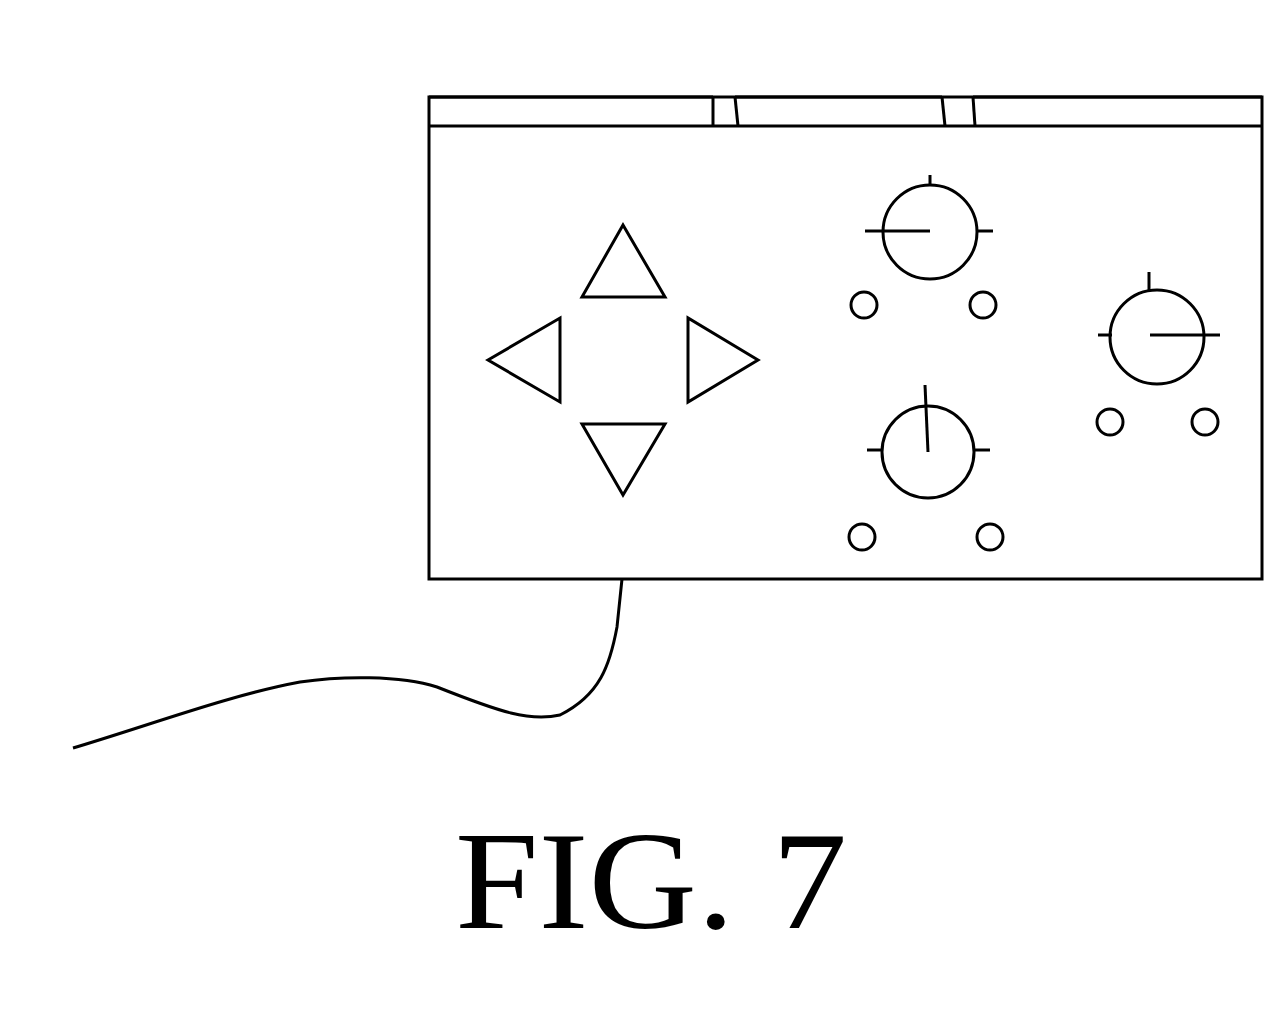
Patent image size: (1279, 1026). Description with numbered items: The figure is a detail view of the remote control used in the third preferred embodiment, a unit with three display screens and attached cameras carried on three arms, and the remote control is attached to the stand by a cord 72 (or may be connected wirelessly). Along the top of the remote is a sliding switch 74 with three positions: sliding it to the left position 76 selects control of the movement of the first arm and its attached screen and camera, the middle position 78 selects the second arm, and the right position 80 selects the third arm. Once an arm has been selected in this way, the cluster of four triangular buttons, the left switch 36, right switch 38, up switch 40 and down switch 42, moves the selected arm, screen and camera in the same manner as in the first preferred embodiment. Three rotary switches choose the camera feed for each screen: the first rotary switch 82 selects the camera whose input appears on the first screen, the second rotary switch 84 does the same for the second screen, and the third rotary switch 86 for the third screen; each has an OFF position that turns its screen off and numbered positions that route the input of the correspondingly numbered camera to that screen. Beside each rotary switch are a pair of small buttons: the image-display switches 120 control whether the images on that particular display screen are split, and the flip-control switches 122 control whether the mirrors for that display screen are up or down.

The left switch 36 is at (488, 360).
The right switch 38 is at (728, 340).
The up switch 40 is at (637, 237).
The down switch 42 is at (600, 462).
The cord 72 is at (327, 680).
The sliding switch 74 is at (781, 97).
The left position 76 is at (518, 97).
The middle position 78 is at (872, 97).
The right position 80 is at (1175, 97).
The rotary switch 1 82 is at (970, 200).
The rotary switch 2 84 is at (962, 490).
The rotary switch 3 86 is at (1188, 298).
The image-display switch 120 is at (860, 318).
The flip-control switch 122 is at (983, 318).